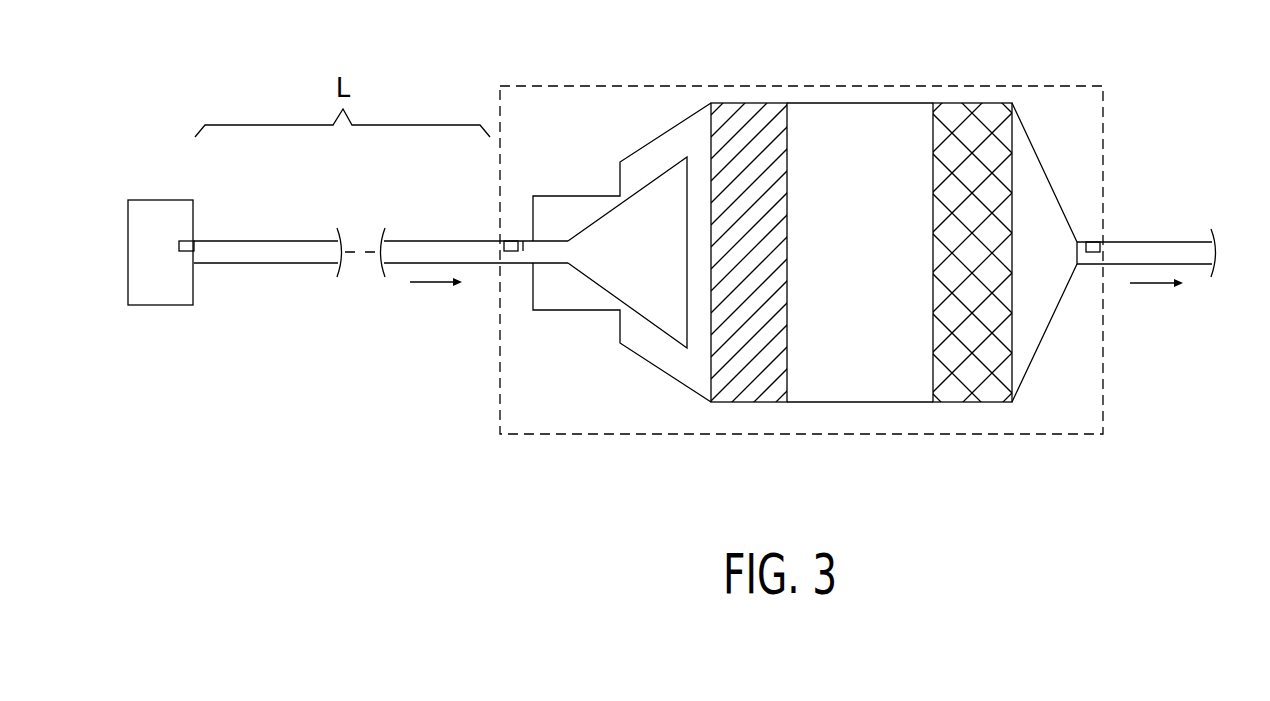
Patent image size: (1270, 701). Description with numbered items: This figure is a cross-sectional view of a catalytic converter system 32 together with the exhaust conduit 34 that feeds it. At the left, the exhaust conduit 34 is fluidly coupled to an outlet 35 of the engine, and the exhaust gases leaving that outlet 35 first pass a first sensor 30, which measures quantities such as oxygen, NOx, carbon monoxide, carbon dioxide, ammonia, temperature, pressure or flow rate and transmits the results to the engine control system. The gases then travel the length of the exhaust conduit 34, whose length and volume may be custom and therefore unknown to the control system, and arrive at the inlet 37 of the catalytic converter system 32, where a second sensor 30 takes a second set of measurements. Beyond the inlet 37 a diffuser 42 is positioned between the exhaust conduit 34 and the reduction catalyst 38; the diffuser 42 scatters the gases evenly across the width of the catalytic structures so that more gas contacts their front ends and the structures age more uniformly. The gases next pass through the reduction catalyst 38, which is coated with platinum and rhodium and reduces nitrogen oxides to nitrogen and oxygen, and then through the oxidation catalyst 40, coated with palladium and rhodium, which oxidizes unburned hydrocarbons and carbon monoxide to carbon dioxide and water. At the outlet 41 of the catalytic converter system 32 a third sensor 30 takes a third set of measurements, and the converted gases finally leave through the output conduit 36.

The sensor 30 is at (186, 252).
The catalytic converter system 32 is at (992, 86).
The exhaust conduit 34 is at (445, 241).
The outlet of the engine 35 is at (164, 200).
The output conduit 36 is at (1143, 242).
The inlet of the catalytic converter system 37 is at (515, 282).
The reduction catalyst 38 is at (745, 402).
The oxidation catalyst 40 is at (975, 402).
The outlet of the catalytic converter system 41 is at (1088, 290).
The diffuser 42 is at (655, 328).